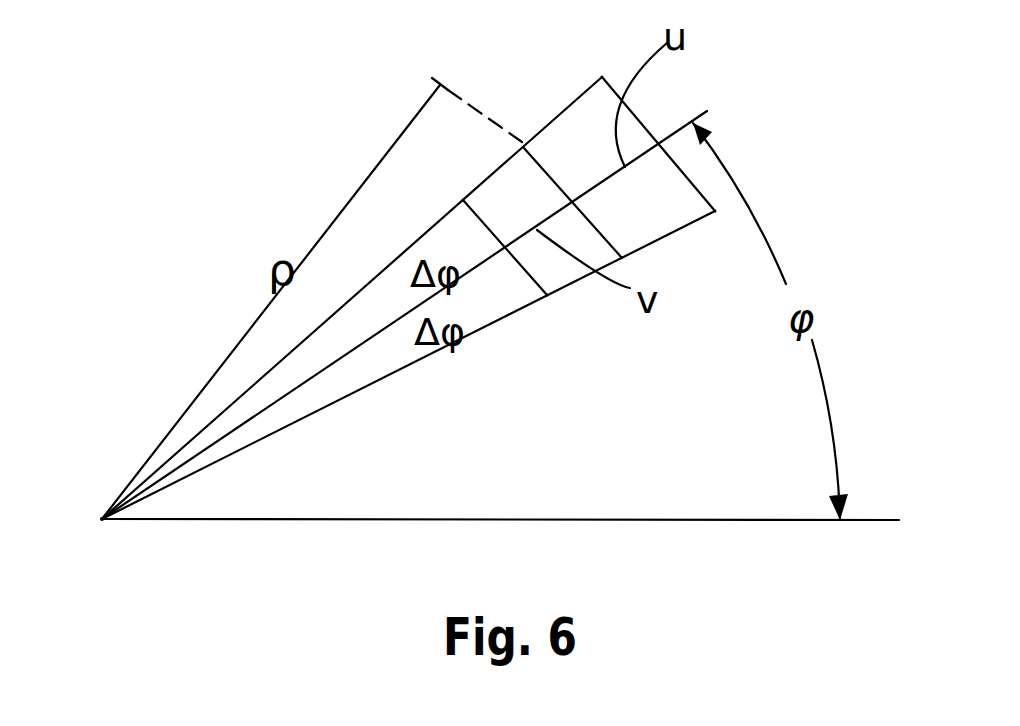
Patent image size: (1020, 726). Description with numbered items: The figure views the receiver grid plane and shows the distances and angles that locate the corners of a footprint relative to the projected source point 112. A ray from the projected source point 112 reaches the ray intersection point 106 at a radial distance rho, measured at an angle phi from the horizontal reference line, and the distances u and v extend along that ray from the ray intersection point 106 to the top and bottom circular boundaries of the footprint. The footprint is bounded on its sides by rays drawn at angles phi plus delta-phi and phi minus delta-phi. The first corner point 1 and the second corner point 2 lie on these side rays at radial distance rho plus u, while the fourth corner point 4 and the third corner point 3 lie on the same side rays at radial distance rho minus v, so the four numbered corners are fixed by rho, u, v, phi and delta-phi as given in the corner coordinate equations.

The ray intersection point 106 is at (499, 315).
The projected source point 112 is at (103, 517).
The first corner point 1 is at (608, 60).
The second corner point 2 is at (721, 241).
The third corner point 3 is at (554, 325).
The fourth corner point 4 is at (452, 186).